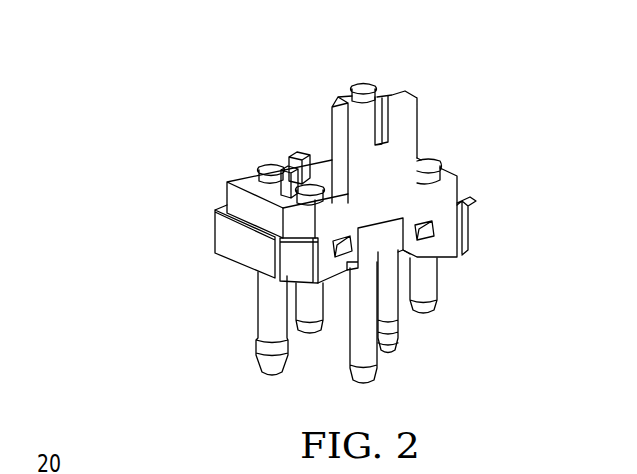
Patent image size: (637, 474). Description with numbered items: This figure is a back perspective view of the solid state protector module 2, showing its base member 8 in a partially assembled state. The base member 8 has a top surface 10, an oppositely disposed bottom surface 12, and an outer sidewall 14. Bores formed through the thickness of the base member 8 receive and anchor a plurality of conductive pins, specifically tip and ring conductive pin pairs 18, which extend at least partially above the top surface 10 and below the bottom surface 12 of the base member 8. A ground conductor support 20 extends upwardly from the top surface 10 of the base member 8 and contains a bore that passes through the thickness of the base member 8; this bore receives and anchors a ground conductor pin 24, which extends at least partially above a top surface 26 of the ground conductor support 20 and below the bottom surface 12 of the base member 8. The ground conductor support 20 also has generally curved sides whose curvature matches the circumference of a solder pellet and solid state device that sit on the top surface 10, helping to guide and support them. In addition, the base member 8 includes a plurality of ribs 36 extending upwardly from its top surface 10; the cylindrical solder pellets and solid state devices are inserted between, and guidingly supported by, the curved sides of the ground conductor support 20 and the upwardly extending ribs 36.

The solid state protector module 2 is at (295, 216).
The base member 8 is at (458, 190).
The top surface 10 is at (270, 146).
The bottom surface 12 is at (232, 262).
The outer sidewall 14 is at (248, 162).
The tip and ring conductive pin pairs 18 is at (268, 356).
The ground conductor support 20 is at (405, 216).
The ground conductor pin 24 is at (362, 86).
The top surface of the ground conductor support 26 is at (386, 98).
The ribs 36 is at (302, 152).